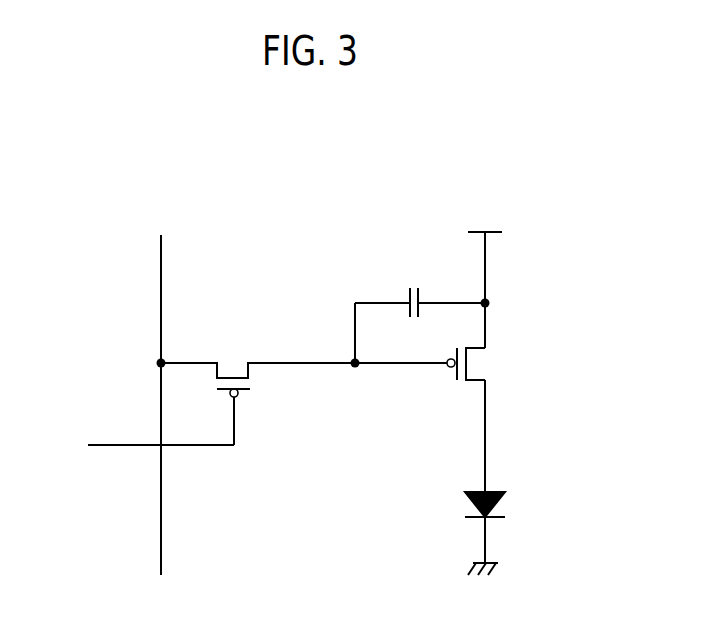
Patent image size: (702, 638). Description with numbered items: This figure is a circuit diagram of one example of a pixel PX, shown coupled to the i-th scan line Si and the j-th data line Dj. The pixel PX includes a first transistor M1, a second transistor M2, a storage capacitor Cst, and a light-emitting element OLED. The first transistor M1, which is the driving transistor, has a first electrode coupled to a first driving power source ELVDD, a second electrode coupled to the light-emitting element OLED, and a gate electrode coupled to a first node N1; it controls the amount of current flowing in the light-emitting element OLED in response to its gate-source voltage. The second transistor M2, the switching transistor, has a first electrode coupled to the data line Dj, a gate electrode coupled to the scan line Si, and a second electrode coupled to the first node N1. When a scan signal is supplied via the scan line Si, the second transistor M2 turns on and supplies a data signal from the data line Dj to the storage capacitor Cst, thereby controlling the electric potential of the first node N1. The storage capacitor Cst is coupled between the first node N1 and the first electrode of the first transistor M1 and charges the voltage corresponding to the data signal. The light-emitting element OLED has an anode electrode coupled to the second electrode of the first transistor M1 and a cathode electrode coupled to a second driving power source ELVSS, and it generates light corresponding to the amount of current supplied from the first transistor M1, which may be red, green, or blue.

The pixel PX is at (509, 124).
The data line Dj is at (160, 384).
The scan line Si is at (151, 445).
The second transistor M2 is at (258, 387).
The first node N1 is at (396, 354).
The storage capacitor Cst is at (420, 288).
The first driving power source ELVDD is at (485, 275).
The first transistor M1 is at (478, 420).
The light-emitting element OLED is at (510, 526).
The second driving power source ELVSS is at (480, 590).